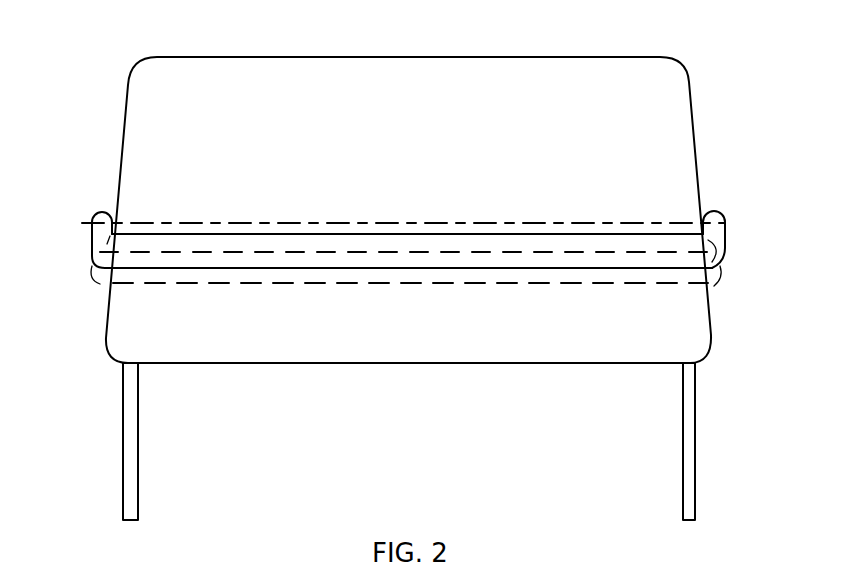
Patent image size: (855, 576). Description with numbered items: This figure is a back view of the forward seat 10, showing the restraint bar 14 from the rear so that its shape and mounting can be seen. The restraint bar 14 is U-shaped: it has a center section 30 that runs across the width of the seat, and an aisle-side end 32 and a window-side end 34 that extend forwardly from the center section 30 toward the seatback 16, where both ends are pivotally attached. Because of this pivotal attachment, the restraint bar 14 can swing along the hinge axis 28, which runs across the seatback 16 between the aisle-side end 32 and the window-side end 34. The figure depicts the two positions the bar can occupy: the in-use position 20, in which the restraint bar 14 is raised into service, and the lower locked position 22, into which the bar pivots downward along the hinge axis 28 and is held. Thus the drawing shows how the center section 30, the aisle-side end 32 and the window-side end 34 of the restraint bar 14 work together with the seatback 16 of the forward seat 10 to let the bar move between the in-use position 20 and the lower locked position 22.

The forward seat 10 is at (318, 52).
The restraint bar 14 is at (723, 248).
The seatback 16 is at (617, 107).
The in-use position 20 is at (173, 235).
The lower locked position 22 is at (237, 285).
The hinge axis 28 is at (722, 222).
The center section 30 is at (495, 246).
The aisle-side end 32 is at (98, 215).
The window-side end 34 is at (716, 213).